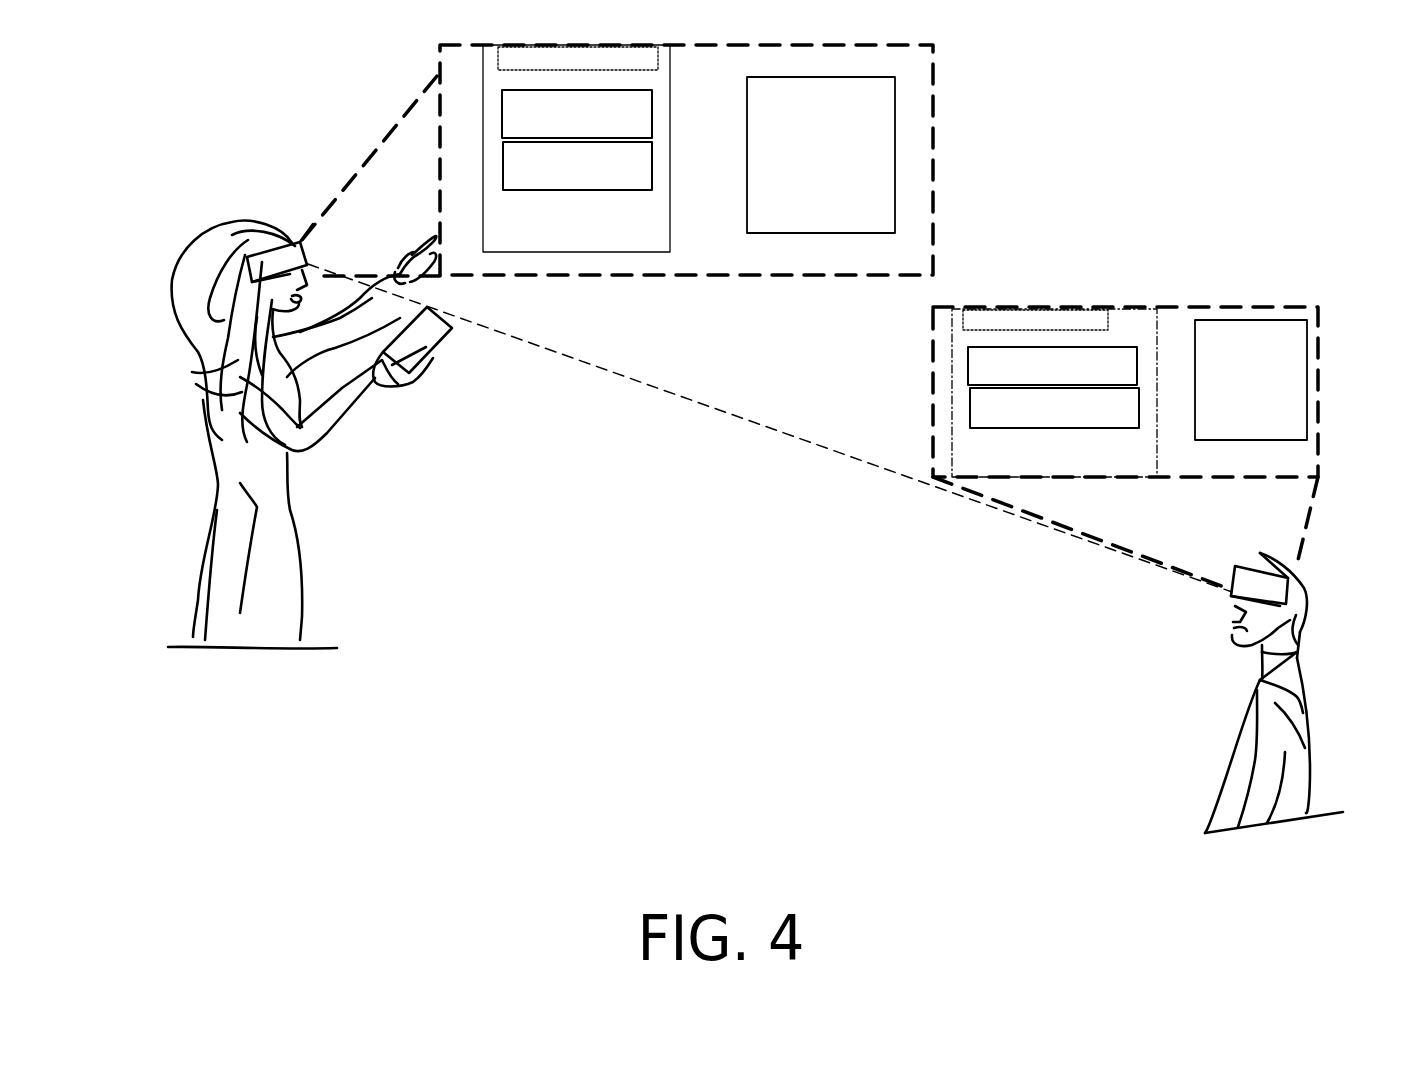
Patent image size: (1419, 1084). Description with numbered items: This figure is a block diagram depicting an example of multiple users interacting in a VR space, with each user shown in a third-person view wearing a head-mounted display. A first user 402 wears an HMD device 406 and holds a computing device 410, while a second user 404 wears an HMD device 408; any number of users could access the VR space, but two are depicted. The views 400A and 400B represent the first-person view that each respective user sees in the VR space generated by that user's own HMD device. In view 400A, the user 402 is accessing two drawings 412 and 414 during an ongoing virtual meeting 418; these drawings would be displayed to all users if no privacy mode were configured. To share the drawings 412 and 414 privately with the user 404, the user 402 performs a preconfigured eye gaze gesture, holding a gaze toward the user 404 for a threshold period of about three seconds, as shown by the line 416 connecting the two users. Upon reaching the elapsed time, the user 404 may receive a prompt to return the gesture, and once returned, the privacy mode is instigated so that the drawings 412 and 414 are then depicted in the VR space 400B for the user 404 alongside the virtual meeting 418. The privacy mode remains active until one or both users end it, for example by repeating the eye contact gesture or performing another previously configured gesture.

The VR space view 400A is at (746, 247).
The VR space view 400B is at (1180, 464).
The user 402 is at (138, 396).
The user 404 is at (1337, 673).
The HMD device 406 is at (315, 262).
The HMD device 408 is at (1208, 578).
The computing device 410 is at (433, 372).
The drawing 412 is at (633, 133).
The drawing 414 is at (634, 182).
The line 416 is at (801, 468).
The virtual meeting 418 is at (841, 217).